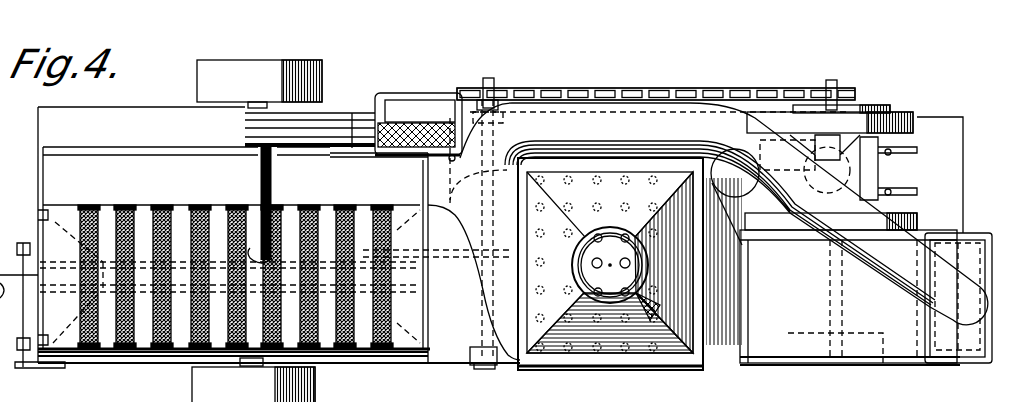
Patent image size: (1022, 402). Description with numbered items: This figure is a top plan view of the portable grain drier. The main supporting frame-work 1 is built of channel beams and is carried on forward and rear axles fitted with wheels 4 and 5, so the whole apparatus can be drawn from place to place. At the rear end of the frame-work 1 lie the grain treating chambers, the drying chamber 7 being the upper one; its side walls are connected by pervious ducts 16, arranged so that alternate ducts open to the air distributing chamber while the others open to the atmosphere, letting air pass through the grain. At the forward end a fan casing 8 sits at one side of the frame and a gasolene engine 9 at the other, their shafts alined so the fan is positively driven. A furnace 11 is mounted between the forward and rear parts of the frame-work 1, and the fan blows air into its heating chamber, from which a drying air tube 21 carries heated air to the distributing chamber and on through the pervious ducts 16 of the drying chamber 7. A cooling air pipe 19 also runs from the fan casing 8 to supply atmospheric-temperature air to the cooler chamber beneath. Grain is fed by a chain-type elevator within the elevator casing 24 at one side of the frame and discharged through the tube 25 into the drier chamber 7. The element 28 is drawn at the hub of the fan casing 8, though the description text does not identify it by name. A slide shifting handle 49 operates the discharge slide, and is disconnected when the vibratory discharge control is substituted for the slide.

The main supporting frame-work 1 is at (136, 98).
The wheels 4 is at (864, 108).
The wheels 5 is at (305, 62).
The drying chamber 7 is at (143, 340).
The fan casing 8 is at (903, 348).
The gasolene engine 9 is at (890, 140).
The furnace 11 is at (638, 352).
The pervious ducts 16 is at (163, 210).
The cooling air pipe 19 is at (627, 118).
The drying air tube 21 is at (467, 220).
The elevator casing 24 is at (335, 127).
The tube 25 is at (278, 189).
The fan hub 28 is at (612, 290).
The slide shifting handle 49 is at (48, 366).